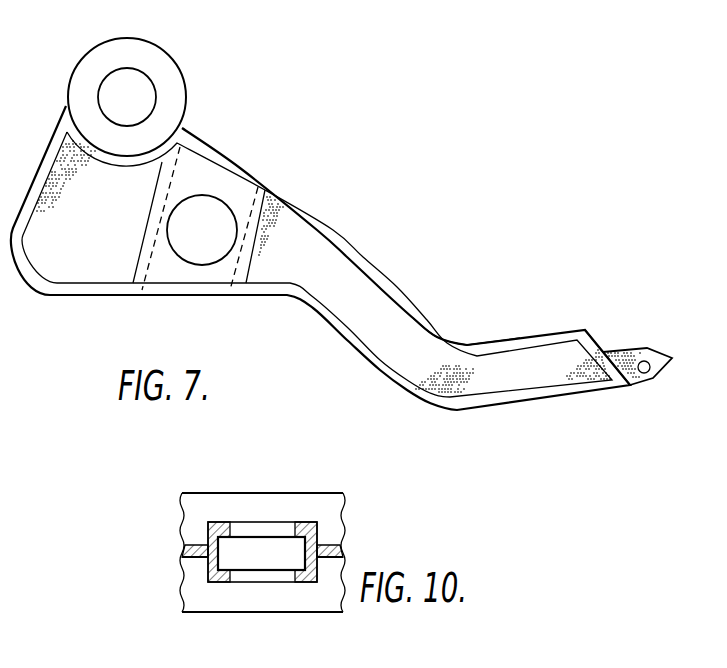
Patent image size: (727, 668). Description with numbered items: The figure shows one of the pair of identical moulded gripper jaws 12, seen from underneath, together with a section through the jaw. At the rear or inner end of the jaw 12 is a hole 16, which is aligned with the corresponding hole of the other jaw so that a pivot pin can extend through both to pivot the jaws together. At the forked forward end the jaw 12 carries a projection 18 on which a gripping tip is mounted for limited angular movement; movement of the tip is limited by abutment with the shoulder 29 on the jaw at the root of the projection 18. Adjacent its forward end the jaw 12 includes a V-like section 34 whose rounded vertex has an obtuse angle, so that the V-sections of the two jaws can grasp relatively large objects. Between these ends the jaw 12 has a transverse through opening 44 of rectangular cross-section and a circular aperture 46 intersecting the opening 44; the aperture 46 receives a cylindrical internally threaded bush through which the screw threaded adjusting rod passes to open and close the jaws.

In FIG. 7, the jaw 12 is at (40, 293).
In FIG. 10, the jaw 12 is at (238, 613).
In FIG. 7, the hole 16 is at (143, 83).
In FIG. 7, the projection 18 is at (662, 350).
In FIG. 7, the shoulder 29 is at (593, 333).
In FIG. 7, the V-like section 34 is at (465, 328).
In FIG. 7, the transverse through opening 44 is at (225, 162).
In FIG. 10, the transverse through opening 44 is at (268, 557).
In FIG. 7, the circular aperture 46 is at (202, 245).
In FIG. 10, the circular aperture 46 is at (260, 528).